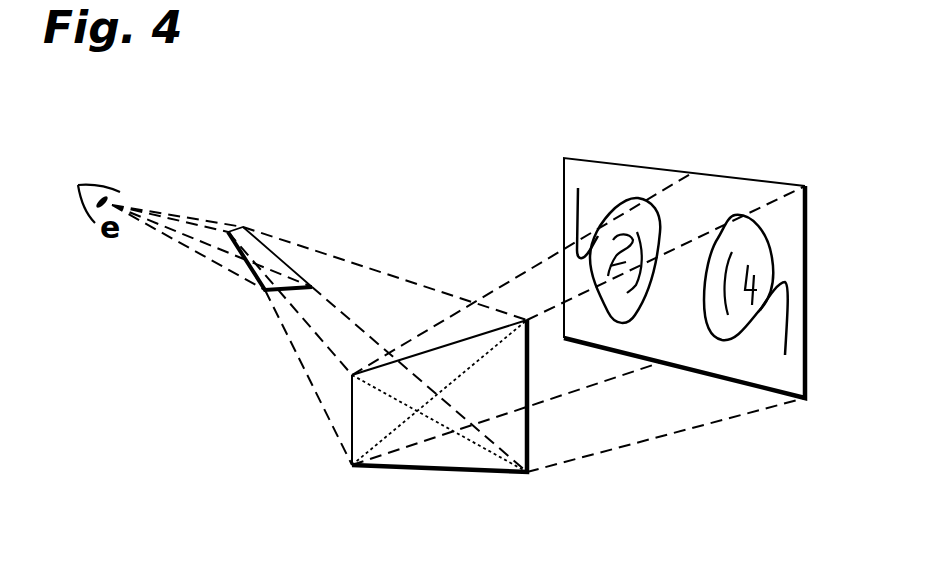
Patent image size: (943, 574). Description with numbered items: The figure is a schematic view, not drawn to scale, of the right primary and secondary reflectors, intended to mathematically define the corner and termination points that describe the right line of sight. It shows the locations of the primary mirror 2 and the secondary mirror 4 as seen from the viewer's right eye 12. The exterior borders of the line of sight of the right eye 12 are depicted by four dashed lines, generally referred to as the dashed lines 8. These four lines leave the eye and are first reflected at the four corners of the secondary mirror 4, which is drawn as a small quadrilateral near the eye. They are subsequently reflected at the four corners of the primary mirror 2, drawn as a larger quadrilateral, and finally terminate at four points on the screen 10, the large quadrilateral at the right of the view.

The right eye 12 is at (80, 185).
The dashed lines 8 is at (150, 240).
The secondary mirror 4 is at (267, 258).
The primary mirror 2 is at (453, 450).
The screen 10 is at (577, 177).